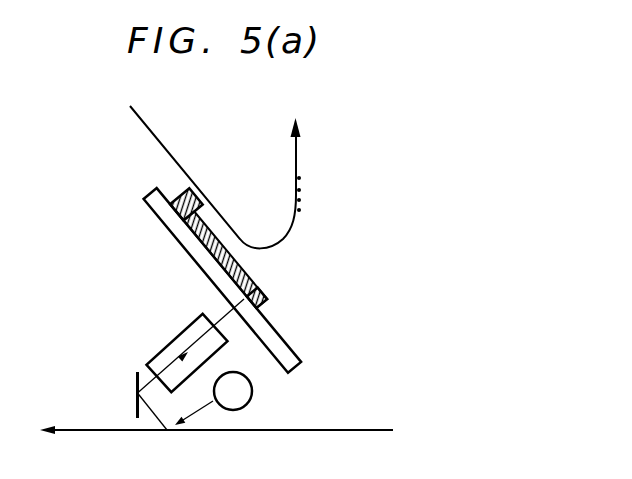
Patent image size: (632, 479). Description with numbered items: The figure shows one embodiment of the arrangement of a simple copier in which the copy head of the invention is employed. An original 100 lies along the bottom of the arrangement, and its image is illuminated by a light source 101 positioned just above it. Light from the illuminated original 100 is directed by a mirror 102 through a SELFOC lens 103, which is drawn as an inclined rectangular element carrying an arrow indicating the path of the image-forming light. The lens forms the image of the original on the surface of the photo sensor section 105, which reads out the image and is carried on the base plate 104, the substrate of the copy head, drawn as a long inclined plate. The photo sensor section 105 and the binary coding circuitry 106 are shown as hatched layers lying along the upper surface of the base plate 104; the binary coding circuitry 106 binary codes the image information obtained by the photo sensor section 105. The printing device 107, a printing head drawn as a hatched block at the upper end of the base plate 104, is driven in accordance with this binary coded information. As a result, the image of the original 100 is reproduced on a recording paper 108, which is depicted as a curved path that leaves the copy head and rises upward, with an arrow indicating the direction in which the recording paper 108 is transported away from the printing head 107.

The original 100 is at (328, 430).
The light source 101 is at (252, 392).
The mirror 102 is at (136, 382).
The SELFOC lens 103 is at (183, 340).
The base plate 104 is at (278, 333).
The photo sensor section 105 is at (264, 297).
The binary coding circuitry 106 is at (238, 259).
The printing device 107 is at (179, 199).
The recording paper 108 is at (297, 152).